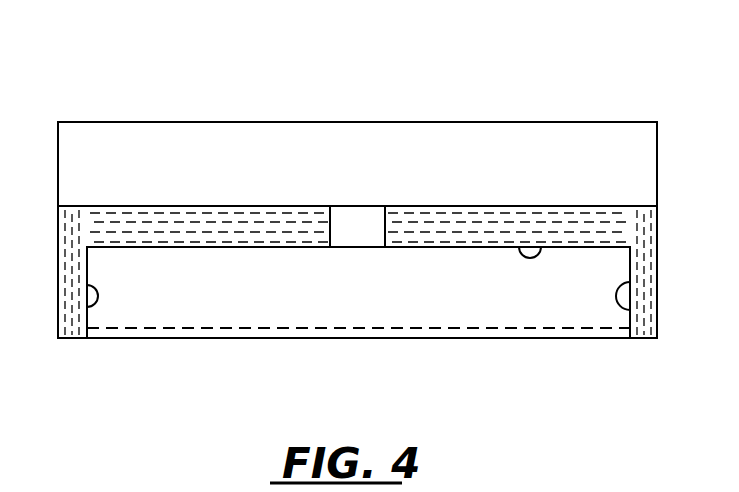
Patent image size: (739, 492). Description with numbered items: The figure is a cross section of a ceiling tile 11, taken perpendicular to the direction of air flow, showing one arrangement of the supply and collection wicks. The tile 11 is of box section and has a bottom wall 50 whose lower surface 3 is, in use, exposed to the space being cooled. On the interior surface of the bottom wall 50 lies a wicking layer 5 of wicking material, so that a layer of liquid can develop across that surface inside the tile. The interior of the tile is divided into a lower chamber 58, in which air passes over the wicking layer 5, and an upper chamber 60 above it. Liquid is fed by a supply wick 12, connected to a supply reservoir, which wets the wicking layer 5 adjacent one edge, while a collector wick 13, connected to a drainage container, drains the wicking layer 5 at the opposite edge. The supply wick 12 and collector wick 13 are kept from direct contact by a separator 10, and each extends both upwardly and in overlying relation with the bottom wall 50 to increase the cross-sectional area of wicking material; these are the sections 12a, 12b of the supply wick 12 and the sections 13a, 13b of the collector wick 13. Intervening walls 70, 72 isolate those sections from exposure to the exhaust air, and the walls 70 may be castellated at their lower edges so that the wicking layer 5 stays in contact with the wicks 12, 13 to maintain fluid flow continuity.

The tile 11 is at (147, 112).
The supply wick 12 is at (89, 223).
The section of supply wick 12a is at (73, 270).
The section of supply wick 12b is at (235, 212).
The collector wick 13 is at (605, 227).
The section of collector wick 13a is at (650, 262).
The section of collector wick 13b is at (502, 218).
The separator 10 is at (357, 226).
The upper chamber 60 is at (435, 164).
The lower chamber 58 is at (358, 292).
The intervening wall 70 is at (100, 300).
The intervening wall 72 is at (542, 247).
The bottom wall 50 is at (181, 338).
The wicking layer 5 is at (295, 336).
The lower surface 3 is at (483, 338).